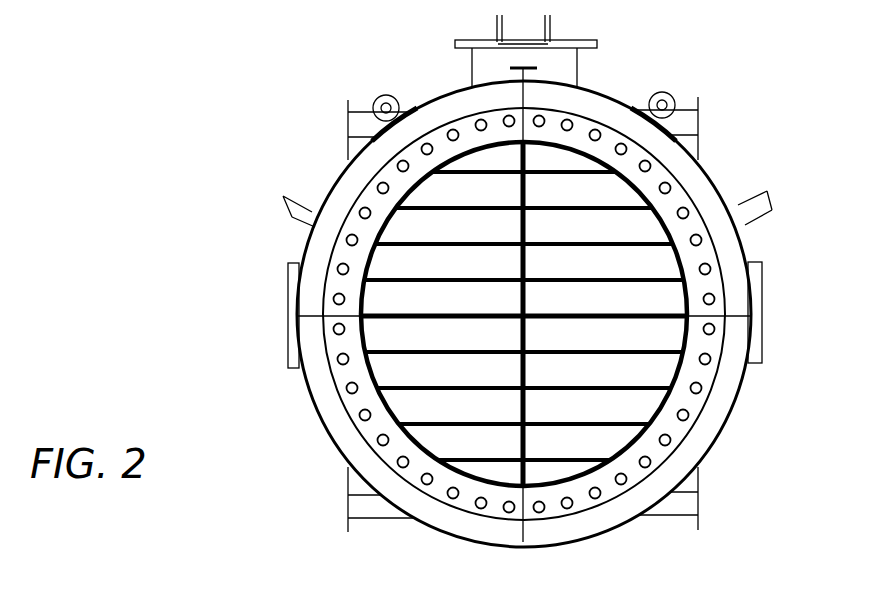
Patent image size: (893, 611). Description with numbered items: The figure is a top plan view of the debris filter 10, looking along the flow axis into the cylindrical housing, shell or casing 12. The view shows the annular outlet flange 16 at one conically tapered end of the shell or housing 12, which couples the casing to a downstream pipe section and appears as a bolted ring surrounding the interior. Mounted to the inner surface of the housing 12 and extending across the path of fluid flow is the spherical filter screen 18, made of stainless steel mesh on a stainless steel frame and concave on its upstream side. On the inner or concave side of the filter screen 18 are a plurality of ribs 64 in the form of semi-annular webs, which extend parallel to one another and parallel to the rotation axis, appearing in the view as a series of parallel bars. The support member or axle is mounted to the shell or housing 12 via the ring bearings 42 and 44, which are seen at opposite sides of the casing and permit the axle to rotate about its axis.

The debris filter 10 is at (214, 124).
The housing, shell or casing 12 is at (318, 411).
The annular outlet flange 16 is at (680, 432).
The filter screen 18 is at (399, 406).
The ring bearing 42 is at (289, 358).
The ring bearing 44 is at (757, 370).
The ribs 64 is at (613, 202).